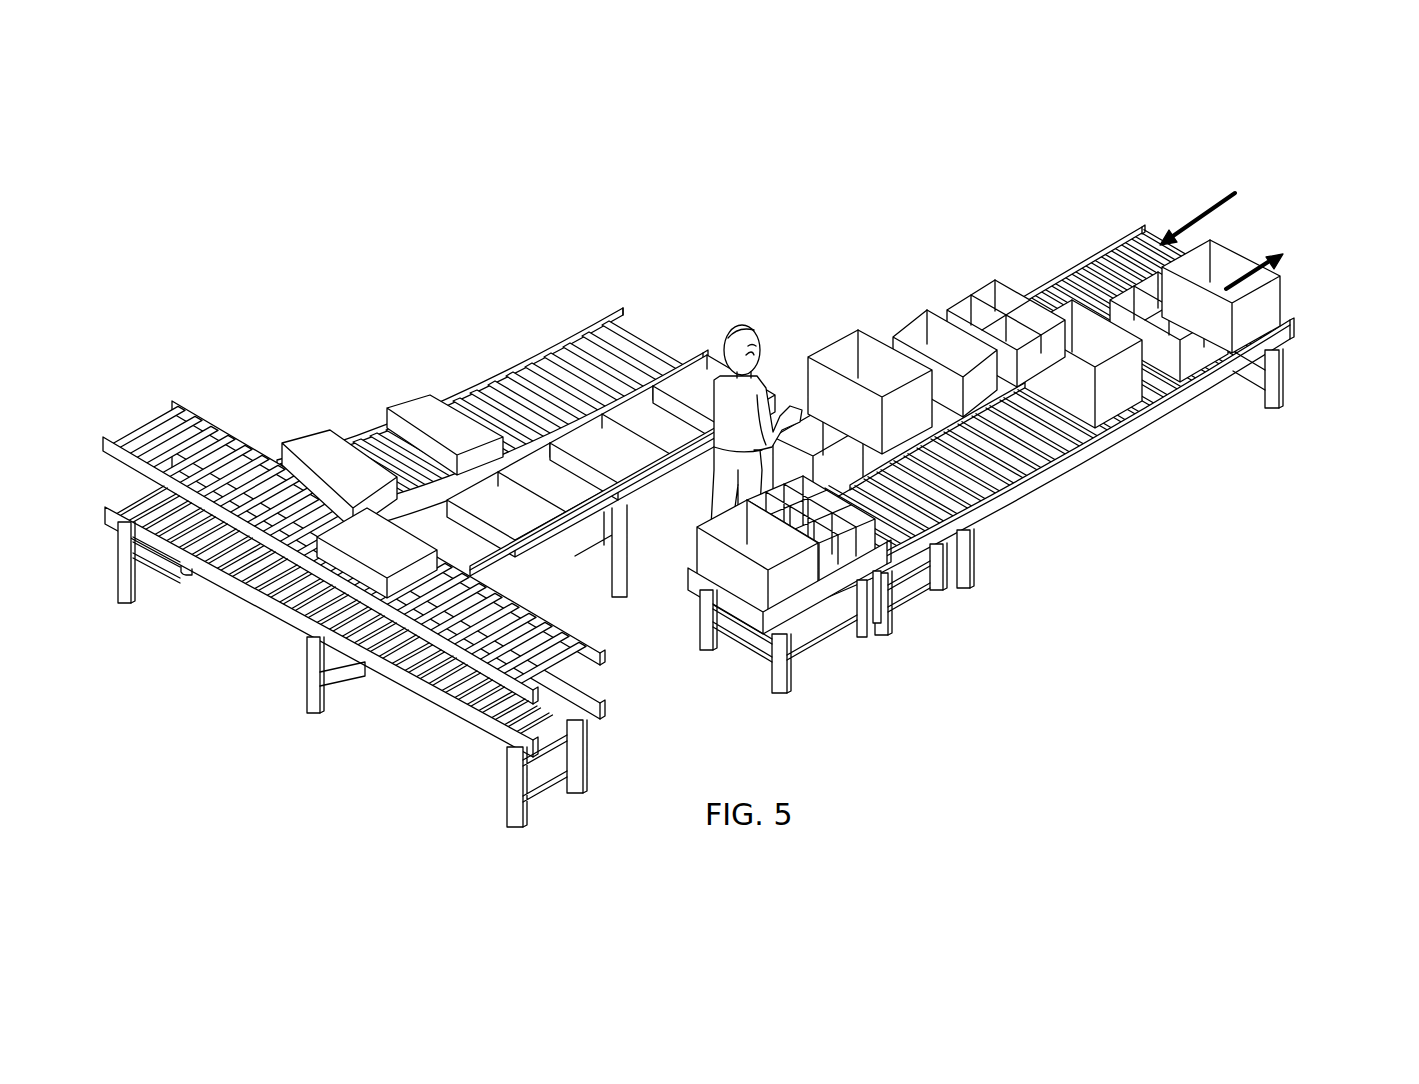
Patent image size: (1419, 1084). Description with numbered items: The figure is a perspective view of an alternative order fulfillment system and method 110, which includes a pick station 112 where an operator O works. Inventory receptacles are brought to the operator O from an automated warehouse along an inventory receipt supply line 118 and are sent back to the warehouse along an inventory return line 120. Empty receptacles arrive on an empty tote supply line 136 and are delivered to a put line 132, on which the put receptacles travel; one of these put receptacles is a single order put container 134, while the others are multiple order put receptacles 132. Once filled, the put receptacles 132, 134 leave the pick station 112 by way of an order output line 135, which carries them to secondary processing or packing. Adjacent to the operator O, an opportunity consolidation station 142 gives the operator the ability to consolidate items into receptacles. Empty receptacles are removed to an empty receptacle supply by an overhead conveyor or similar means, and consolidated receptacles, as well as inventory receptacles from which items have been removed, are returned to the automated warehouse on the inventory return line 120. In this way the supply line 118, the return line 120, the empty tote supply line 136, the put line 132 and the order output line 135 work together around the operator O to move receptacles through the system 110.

The order fulfillment system and method 110 is at (685, 211).
The pick station 112 is at (483, 732).
The inventory receipt supply line 118 is at (1090, 255).
The inventory return line 120 is at (1157, 403).
The put line 132 is at (641, 478).
The single order put container 134 is at (697, 350).
The order output line 135 is at (218, 570).
The empty tote supply line 136 is at (196, 412).
The opportunity consolidation station 142 is at (823, 592).
The operator O is at (760, 385).